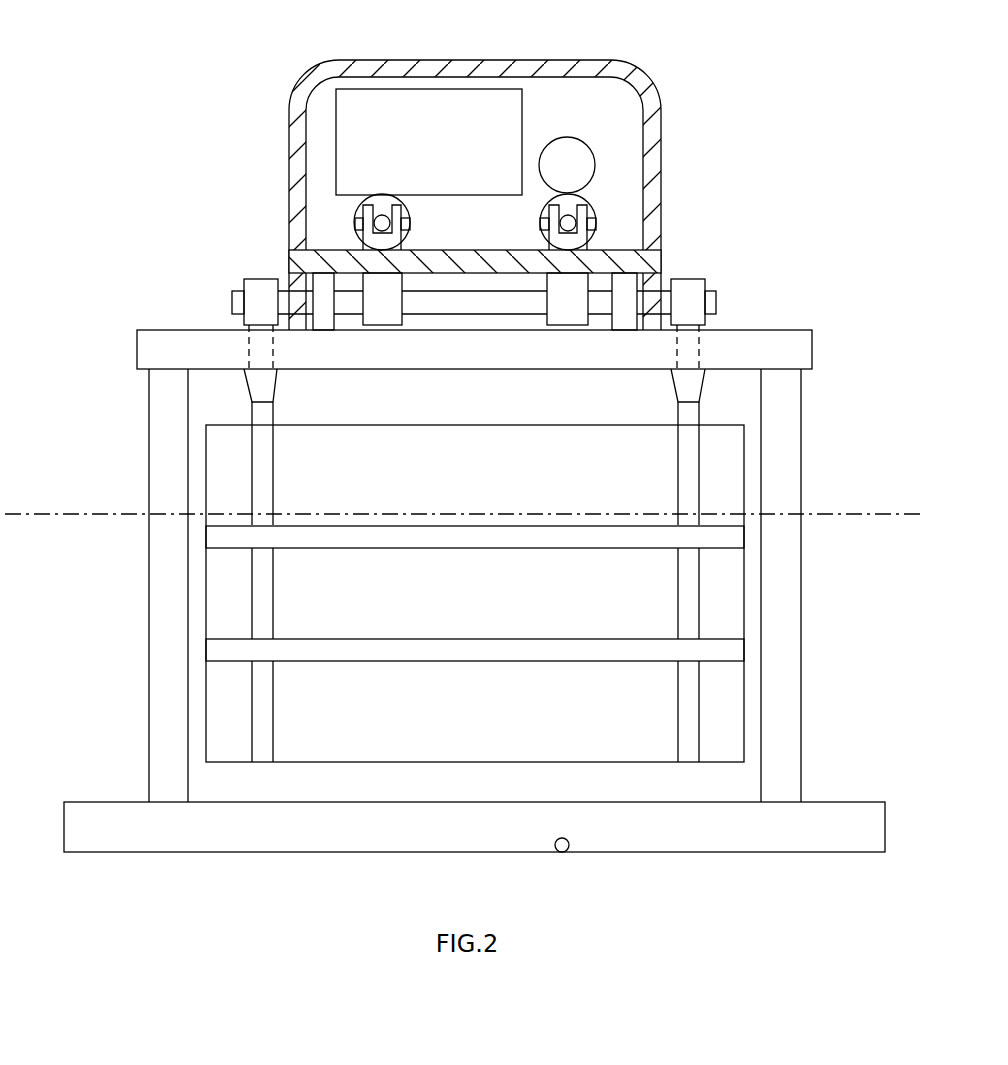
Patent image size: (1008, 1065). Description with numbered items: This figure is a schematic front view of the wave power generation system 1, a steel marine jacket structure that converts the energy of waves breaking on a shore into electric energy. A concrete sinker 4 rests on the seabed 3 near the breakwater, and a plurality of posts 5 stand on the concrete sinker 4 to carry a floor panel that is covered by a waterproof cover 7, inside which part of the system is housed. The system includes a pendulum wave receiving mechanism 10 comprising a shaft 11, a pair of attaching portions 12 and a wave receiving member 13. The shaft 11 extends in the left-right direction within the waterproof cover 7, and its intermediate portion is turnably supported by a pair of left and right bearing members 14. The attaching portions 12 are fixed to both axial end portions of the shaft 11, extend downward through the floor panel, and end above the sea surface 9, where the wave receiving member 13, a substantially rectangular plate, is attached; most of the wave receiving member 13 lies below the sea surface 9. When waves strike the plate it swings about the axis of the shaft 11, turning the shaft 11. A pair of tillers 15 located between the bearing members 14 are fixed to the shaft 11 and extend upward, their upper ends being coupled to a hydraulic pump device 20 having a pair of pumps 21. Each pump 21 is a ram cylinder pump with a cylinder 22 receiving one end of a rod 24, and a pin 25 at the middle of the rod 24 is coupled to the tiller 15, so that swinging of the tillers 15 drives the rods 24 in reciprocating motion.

The wave power generation system 1 is at (553, 100).
The seabed 3 is at (560, 853).
The concrete sinker 4 is at (507, 843).
The post 5 is at (160, 473).
The waterproof cover 7 is at (648, 93).
The sea surface 9 is at (613, 512).
The wave receiving mechanism 10 is at (741, 414).
The shaft 11 is at (472, 302).
The attaching portion 12 is at (265, 288).
The wave receiving member 13 is at (498, 437).
The bearing member 14 is at (323, 323).
The tiller 15 is at (397, 236).
The hydraulic pump device 20 is at (392, 187).
The pump 21 is at (389, 203).
The cylinder 22 is at (380, 205).
The rod 24 is at (377, 216).
The pin 25 is at (355, 223).